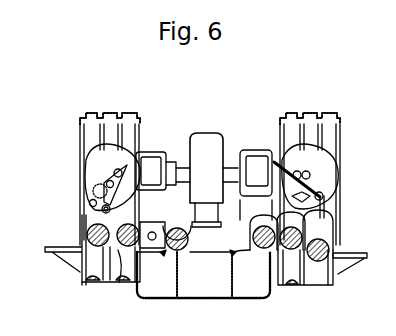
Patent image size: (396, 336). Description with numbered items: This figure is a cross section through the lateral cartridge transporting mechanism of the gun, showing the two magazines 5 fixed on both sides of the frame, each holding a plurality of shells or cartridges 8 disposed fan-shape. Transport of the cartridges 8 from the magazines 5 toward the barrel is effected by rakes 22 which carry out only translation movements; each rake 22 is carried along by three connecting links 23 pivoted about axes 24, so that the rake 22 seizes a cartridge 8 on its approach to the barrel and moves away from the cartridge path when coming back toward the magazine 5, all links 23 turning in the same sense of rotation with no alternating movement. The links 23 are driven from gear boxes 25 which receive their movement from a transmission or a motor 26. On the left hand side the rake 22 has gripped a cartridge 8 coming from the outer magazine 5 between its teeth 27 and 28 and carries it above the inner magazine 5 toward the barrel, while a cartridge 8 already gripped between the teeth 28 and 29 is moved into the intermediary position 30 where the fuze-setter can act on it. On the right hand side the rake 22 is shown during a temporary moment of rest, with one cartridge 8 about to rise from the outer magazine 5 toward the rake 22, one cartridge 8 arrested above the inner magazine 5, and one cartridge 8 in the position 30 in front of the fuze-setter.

The magazine 5 is at (92, 270).
The cartridge 8 is at (70, 250).
The rake 22 is at (328, 203).
The connecting link 23 is at (115, 176).
The axis 24 is at (92, 190).
The gear box 25 is at (110, 152).
The motor 26 is at (210, 142).
The tooth 27 is at (86, 237).
The tooth 28 is at (120, 275).
The tooth 29 is at (152, 256).
The intermediary position 30 is at (194, 245).